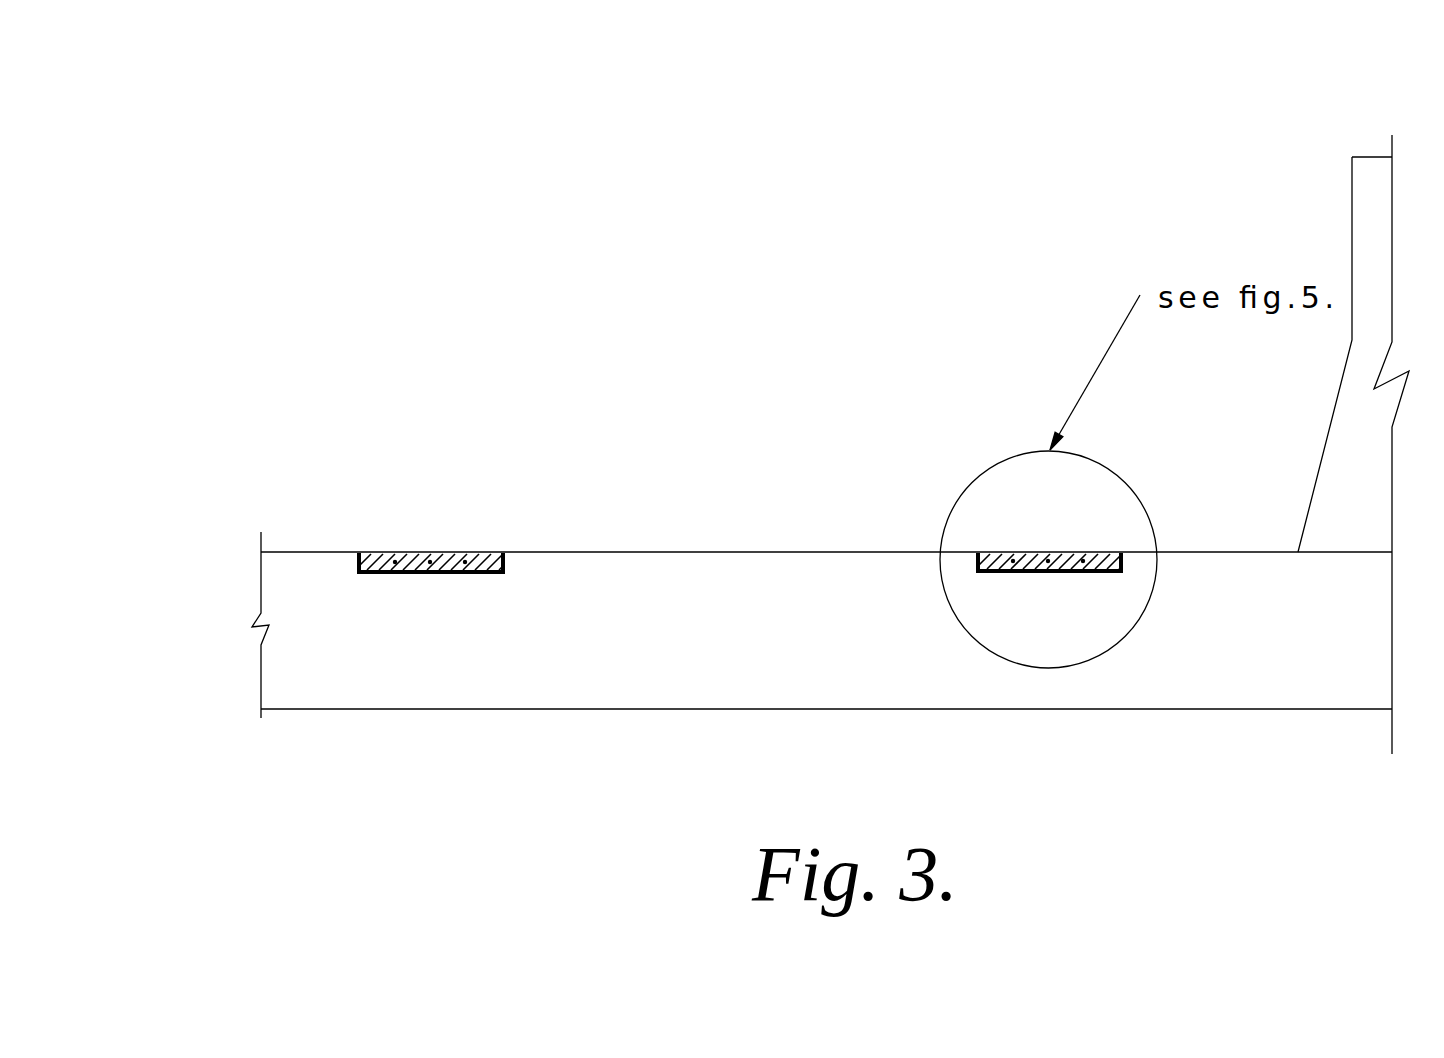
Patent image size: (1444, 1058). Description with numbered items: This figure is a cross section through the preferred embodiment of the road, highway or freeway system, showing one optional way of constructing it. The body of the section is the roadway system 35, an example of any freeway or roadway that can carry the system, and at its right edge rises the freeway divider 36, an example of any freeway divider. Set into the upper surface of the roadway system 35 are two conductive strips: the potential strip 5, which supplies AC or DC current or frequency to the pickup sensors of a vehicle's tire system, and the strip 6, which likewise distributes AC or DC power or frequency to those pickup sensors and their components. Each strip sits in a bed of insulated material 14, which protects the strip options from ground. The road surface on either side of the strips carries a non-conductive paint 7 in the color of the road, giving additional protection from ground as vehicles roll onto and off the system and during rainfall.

The potential strip 5 is at (918, 426).
The strip 6 is at (394, 463).
The non-conductive paint 7 is at (802, 461).
The insulated material 14 is at (769, 672).
The freeway or roadway system 35 is at (830, 473).
The freeway divider 36 is at (1227, 290).